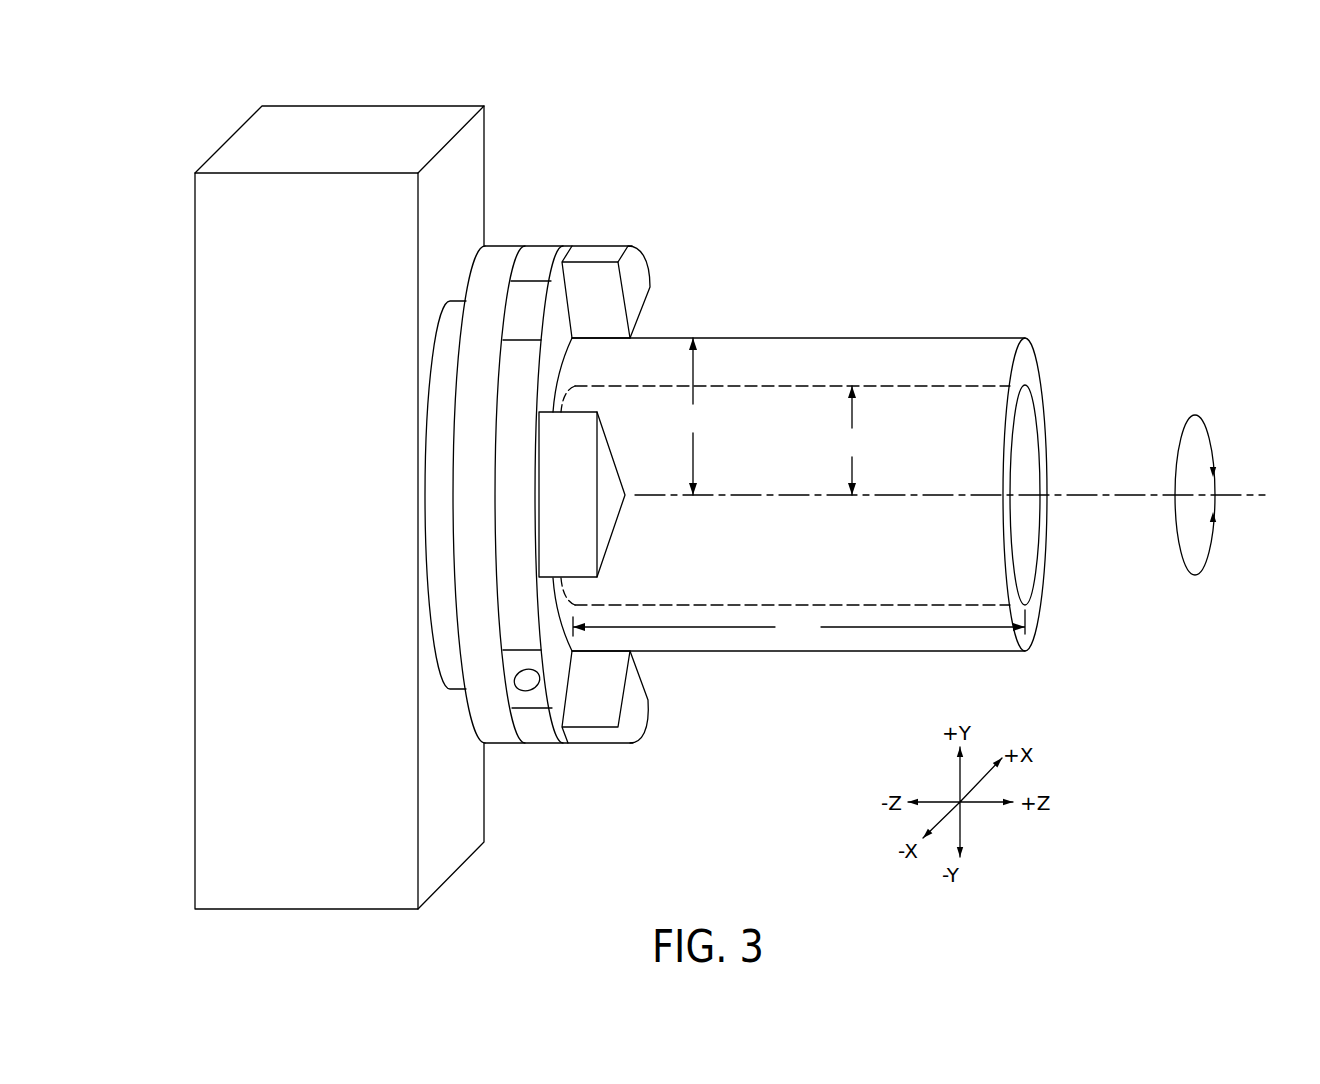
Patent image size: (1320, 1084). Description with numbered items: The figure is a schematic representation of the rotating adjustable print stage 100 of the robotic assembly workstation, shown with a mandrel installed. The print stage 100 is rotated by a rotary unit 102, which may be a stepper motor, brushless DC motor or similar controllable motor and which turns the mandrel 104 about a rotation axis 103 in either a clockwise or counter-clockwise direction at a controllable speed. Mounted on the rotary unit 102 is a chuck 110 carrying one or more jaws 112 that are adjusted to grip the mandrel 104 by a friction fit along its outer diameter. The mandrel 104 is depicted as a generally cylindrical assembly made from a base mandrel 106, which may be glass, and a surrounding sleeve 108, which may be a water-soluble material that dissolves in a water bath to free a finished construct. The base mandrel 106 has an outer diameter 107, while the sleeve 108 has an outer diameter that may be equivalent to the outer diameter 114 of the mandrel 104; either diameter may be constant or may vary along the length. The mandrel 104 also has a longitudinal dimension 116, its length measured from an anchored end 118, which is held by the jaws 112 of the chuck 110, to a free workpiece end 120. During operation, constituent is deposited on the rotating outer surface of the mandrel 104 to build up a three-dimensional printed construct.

The rotating adjustable print stage 100 is at (528, 138).
The rotary unit 102 is at (217, 401).
The rotation axis 103 is at (1093, 494).
The mandrel 104 is at (883, 310).
The base mandrel 106 is at (1022, 432).
The outer diameter of the base mandrel 107 is at (856, 440).
The sleeve 108 is at (958, 337).
The chuck 110 is at (562, 215).
The jaws 112 is at (632, 275).
The outer diameter of the mandrel 114 is at (702, 416).
The longitudinal dimension 116 is at (799, 626).
The anchored end 118 is at (657, 672).
The workpiece end 120 is at (1068, 597).